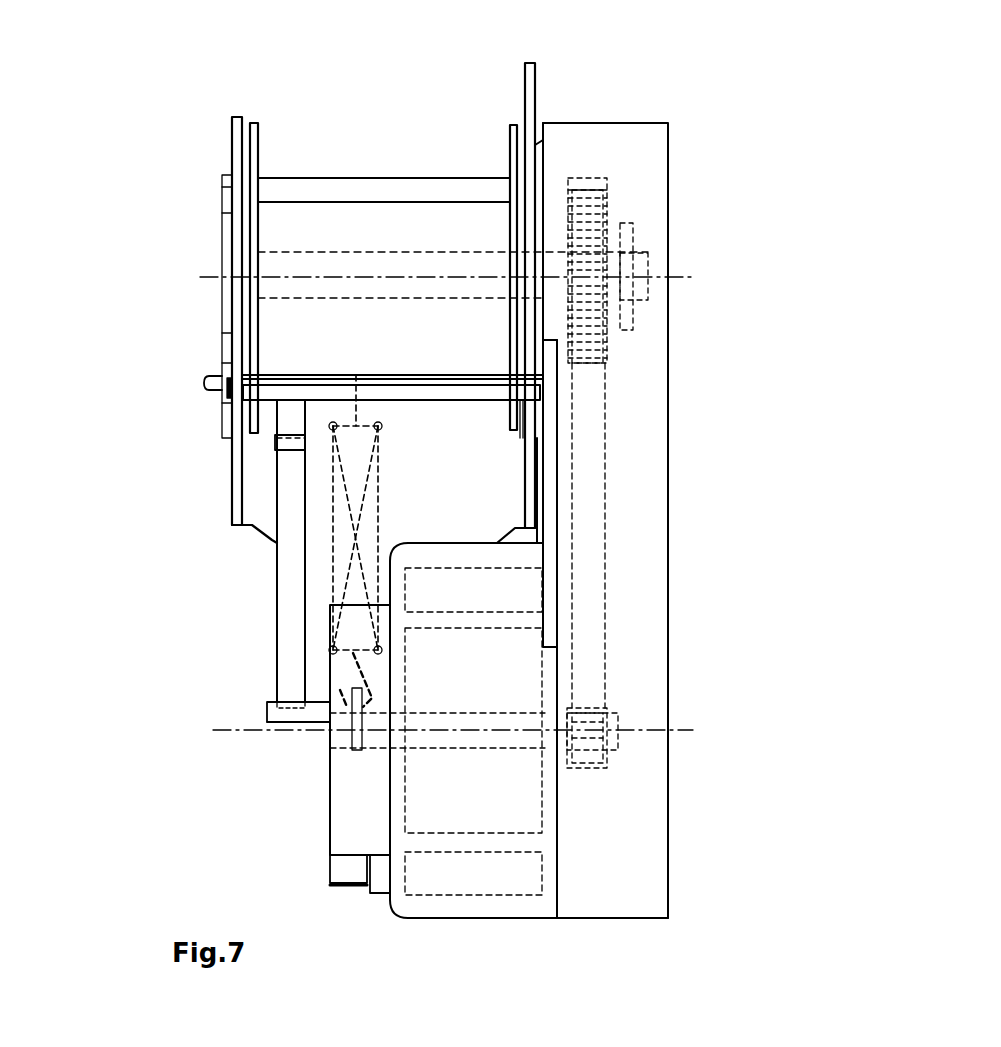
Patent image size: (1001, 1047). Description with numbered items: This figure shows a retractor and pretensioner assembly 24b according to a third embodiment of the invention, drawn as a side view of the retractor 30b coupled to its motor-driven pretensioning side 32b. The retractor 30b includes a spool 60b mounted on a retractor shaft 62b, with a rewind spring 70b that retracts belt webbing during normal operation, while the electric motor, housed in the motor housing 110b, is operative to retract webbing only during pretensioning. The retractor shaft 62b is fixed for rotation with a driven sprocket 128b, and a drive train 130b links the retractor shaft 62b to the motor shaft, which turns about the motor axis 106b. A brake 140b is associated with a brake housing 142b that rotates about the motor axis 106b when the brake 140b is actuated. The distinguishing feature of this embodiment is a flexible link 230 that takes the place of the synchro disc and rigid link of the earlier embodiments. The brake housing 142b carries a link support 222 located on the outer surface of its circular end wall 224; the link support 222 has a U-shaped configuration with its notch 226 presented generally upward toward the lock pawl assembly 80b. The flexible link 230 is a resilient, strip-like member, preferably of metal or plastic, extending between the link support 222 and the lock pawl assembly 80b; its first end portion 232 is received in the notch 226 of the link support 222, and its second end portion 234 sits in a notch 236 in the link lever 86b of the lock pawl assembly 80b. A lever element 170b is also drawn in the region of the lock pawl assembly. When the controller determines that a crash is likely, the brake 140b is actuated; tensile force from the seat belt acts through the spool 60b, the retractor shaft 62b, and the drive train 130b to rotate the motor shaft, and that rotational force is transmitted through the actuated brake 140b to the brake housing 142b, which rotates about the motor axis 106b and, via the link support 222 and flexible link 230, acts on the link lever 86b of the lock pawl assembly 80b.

The retractor and pretensioner assembly 24b is at (175, 665).
The retractor 30b is at (183, 247).
The drive assembly 32b is at (208, 813).
The spool 60b is at (438, 178).
The retractor shaft 62b is at (330, 252).
The rewind spring 70b is at (628, 227).
The lock pawl assembly 80b is at (210, 394).
The link lever 86b is at (282, 442).
The motor axis 106b is at (680, 732).
The motor housing 110b is at (478, 887).
The driven sprocket 128b is at (593, 715).
The drive train 130b is at (607, 480).
The brake 140b is at (350, 868).
The brake housing 142b is at (328, 840).
The brake lever 170b is at (384, 487).
The link support 222 is at (272, 718).
The circular end wall 224 is at (330, 798).
The notch 226 is at (290, 705).
The flexible link 230 is at (275, 564).
The first end portion 232 is at (298, 678).
The second end portion 234 is at (290, 463).
The notch 236 is at (292, 443).